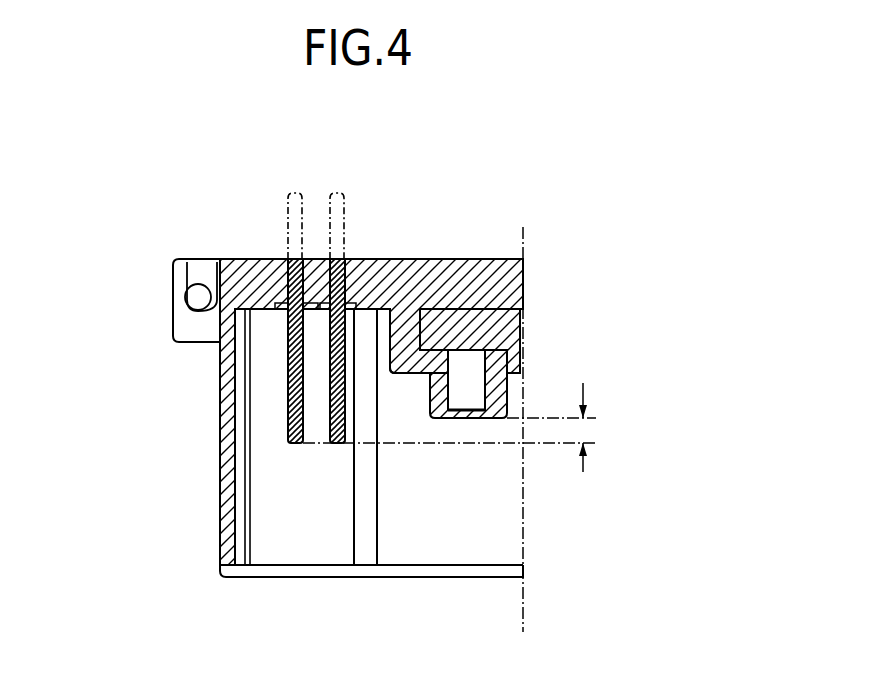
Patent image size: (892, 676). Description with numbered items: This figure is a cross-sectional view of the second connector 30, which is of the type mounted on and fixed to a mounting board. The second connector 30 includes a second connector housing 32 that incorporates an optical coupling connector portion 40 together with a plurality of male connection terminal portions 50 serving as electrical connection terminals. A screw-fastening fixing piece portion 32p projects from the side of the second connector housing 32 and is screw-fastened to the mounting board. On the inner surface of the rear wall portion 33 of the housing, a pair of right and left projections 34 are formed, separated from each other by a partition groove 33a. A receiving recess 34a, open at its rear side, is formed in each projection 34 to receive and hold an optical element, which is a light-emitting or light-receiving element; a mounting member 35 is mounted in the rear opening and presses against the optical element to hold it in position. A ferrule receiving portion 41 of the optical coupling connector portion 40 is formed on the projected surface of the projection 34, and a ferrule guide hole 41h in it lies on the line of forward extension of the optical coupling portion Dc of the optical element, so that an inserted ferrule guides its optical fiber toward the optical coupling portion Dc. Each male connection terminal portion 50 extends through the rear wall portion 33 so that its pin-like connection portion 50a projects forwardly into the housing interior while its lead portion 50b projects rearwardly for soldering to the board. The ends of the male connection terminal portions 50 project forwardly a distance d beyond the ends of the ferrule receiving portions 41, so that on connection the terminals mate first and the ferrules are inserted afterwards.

The second connector 30 is at (448, 184).
The second connector housing 32 is at (248, 258).
The screw-fastening fixing piece portion 32p is at (172, 297).
The rear wall portion 33 is at (378, 260).
The partition groove 33a is at (521, 331).
The projection 34 is at (405, 376).
The receiving recess 34a is at (418, 309).
The mounting member 35 is at (503, 260).
The optical coupling connector portion 40 is at (491, 420).
The ferrule receiving portion 41 is at (507, 399).
The ferrule guide hole 41h is at (453, 419).
The male connection terminal portion 50 is at (335, 447).
The connection portion 50a is at (333, 412).
The lead portion 50b is at (337, 193).
The optical coupling portion Dc is at (506, 353).
The distance d is at (585, 432).